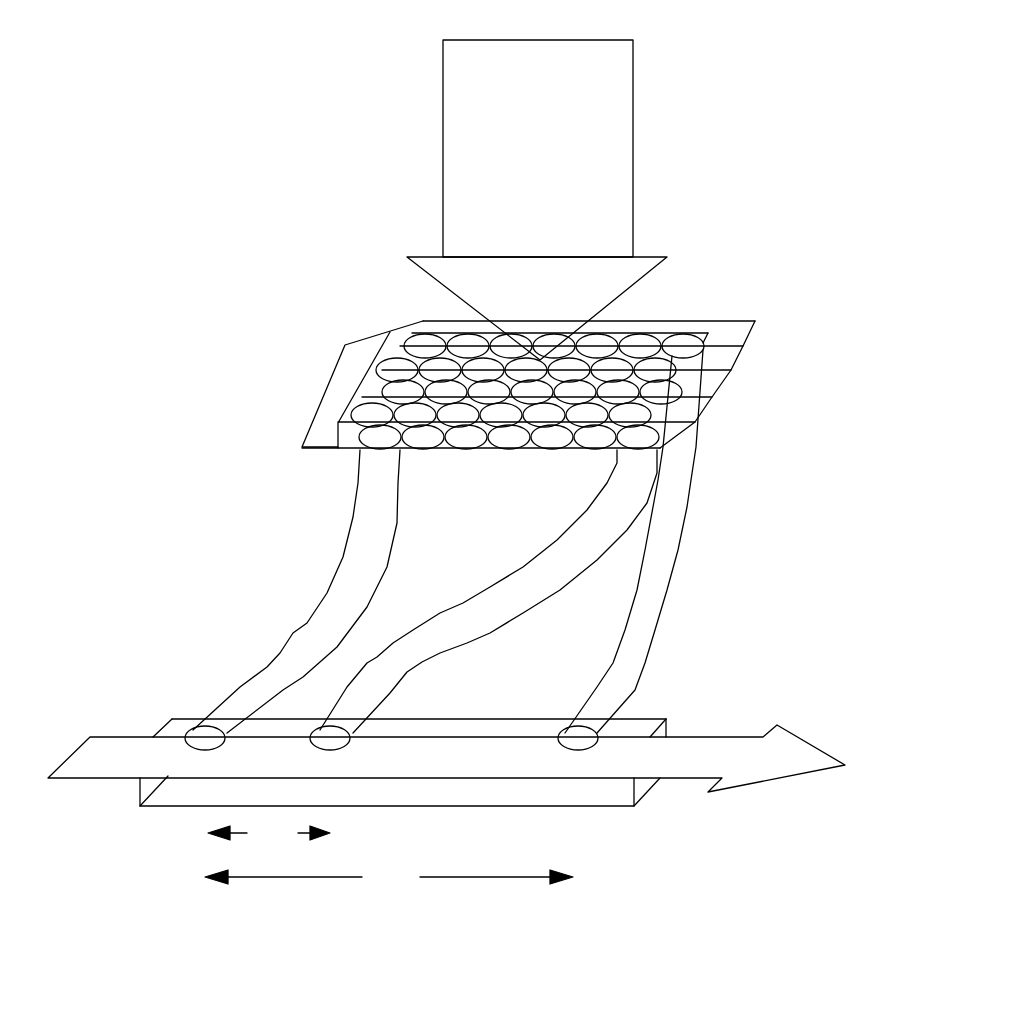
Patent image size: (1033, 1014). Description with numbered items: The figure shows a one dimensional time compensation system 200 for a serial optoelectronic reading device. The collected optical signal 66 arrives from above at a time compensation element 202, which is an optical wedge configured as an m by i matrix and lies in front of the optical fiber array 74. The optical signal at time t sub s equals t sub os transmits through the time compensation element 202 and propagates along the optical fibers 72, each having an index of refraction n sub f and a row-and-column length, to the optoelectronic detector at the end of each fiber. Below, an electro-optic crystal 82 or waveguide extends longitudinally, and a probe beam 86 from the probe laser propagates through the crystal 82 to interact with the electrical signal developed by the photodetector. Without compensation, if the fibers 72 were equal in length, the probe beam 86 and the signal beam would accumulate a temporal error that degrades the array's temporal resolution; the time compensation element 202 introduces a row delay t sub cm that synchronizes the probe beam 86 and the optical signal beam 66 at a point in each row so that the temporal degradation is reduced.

The time compensation system 200 is at (847, 106).
The collected optical signal 66 is at (620, 173).
The time compensation element 202 is at (345, 345).
The optical fiber array 74 is at (335, 443).
The optical fiber 72 is at (347, 527).
The electro-optic crystal 82 is at (655, 790).
The probe beam 86 is at (798, 735).